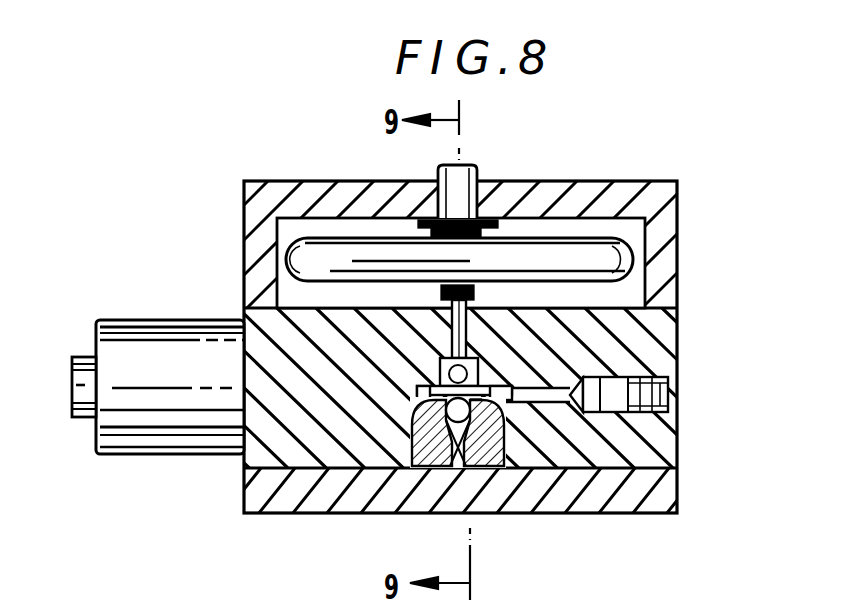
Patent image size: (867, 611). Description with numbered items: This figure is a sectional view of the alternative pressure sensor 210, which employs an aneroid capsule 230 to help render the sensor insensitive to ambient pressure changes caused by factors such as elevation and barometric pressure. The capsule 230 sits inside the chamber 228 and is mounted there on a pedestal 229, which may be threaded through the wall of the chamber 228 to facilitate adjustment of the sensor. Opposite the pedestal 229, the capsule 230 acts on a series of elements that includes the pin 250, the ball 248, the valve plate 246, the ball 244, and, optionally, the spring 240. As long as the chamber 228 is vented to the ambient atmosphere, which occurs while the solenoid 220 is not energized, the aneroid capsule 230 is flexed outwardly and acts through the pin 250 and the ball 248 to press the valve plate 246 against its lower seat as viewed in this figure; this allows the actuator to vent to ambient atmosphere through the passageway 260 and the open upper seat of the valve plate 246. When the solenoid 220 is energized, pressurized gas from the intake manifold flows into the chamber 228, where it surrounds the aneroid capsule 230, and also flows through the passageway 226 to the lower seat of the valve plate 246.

The pressure sensor 210 is at (125, 246).
The solenoid 220 is at (163, 400).
The passageway 226 is at (472, 450).
The chamber 228 is at (302, 238).
The pedestal 229 is at (462, 184).
The aneroid capsule 230 is at (633, 255).
The spring 240 is at (442, 468).
The ball 244 is at (512, 442).
The valve plate 246 is at (420, 388).
The ball 248 is at (428, 378).
The pin 250 is at (478, 382).
The passageway 260 is at (668, 400).